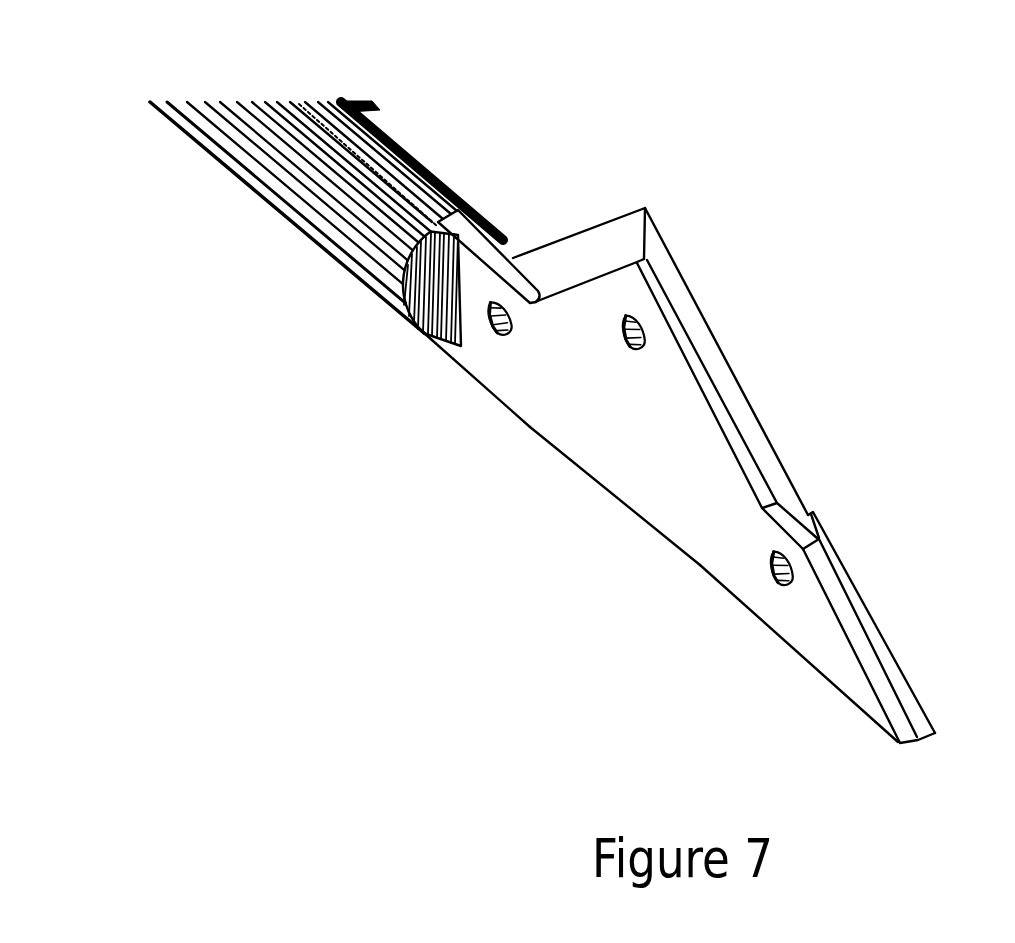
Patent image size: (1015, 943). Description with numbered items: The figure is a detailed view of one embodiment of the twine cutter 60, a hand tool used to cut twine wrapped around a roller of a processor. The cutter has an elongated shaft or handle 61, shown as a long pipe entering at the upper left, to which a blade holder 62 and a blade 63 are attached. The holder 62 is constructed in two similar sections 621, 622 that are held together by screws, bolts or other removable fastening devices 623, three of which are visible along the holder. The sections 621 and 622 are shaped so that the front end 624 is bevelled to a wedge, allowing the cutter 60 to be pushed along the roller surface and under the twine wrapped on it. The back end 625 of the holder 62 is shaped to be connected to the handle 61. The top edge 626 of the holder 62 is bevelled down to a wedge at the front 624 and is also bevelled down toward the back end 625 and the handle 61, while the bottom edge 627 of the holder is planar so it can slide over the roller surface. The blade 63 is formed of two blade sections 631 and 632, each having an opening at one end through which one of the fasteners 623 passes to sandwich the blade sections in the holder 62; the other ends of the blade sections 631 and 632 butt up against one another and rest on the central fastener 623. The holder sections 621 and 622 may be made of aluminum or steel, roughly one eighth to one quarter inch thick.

The twine cutter 60 is at (844, 326).
The handle 61 is at (407, 160).
The blade holder 62 is at (533, 431).
The blade 63 is at (711, 452).
The holder section 621 is at (840, 617).
The holder section 622 is at (843, 572).
The fasteners 623 is at (492, 323).
The front end 624 is at (853, 683).
The back end 625 is at (427, 333).
The top edge 626 is at (617, 275).
The bottom edge 627 is at (688, 540).
The blade section 631 is at (543, 257).
The blade section 632 is at (760, 457).